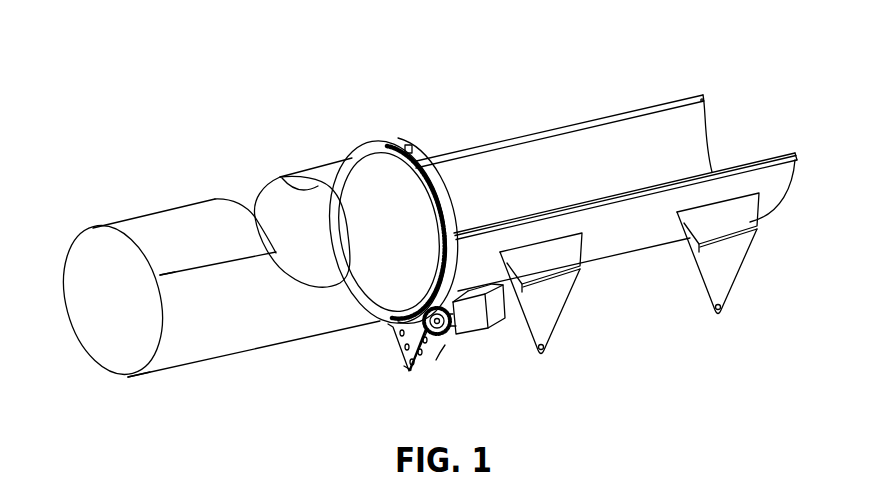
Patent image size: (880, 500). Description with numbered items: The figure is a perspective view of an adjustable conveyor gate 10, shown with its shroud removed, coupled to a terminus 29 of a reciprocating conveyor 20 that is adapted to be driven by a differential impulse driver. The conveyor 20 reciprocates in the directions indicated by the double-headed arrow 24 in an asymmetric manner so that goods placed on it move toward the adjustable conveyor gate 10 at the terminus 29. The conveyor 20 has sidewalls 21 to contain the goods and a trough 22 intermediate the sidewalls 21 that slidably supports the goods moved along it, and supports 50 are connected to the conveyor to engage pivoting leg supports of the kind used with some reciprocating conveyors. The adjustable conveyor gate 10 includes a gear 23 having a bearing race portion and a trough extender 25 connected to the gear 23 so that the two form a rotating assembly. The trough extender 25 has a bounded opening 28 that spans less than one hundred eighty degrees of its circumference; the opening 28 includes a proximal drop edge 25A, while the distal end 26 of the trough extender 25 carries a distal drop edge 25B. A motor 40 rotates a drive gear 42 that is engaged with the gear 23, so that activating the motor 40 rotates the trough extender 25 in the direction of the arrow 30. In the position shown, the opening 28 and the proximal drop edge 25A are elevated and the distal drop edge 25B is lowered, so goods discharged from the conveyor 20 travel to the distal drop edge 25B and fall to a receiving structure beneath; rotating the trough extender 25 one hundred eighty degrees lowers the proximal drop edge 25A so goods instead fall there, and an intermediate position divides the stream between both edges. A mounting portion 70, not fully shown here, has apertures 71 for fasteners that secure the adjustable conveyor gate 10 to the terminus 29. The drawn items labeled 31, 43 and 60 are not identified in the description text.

The adjustable conveyor gate 10 is at (205, 459).
The reciprocating conveyor 20 is at (604, 151).
The sidewalls 21 is at (499, 199).
The trough 22 is at (592, 184).
The gear 23 is at (377, 142).
The double-headed arrow 24 is at (612, 50).
The trough extender 25 is at (214, 304).
The proximal drop edge 25A is at (316, 186).
The distal drop edge 25B is at (132, 379).
The distal end 26 is at (170, 329).
The opening 28 is at (269, 144).
The terminus 29 is at (477, 148).
The arrow 30 is at (71, 206).
The end face of drum 31 is at (103, 347).
The motor 40 is at (455, 350).
The drive gear 42 is at (438, 353).
The pinion gear 43 is at (423, 377).
The supports 50 is at (562, 320).
The mounting bracket 60 is at (404, 378).
The mounting portion 70 is at (388, 370).
The apertures 71 is at (397, 335).